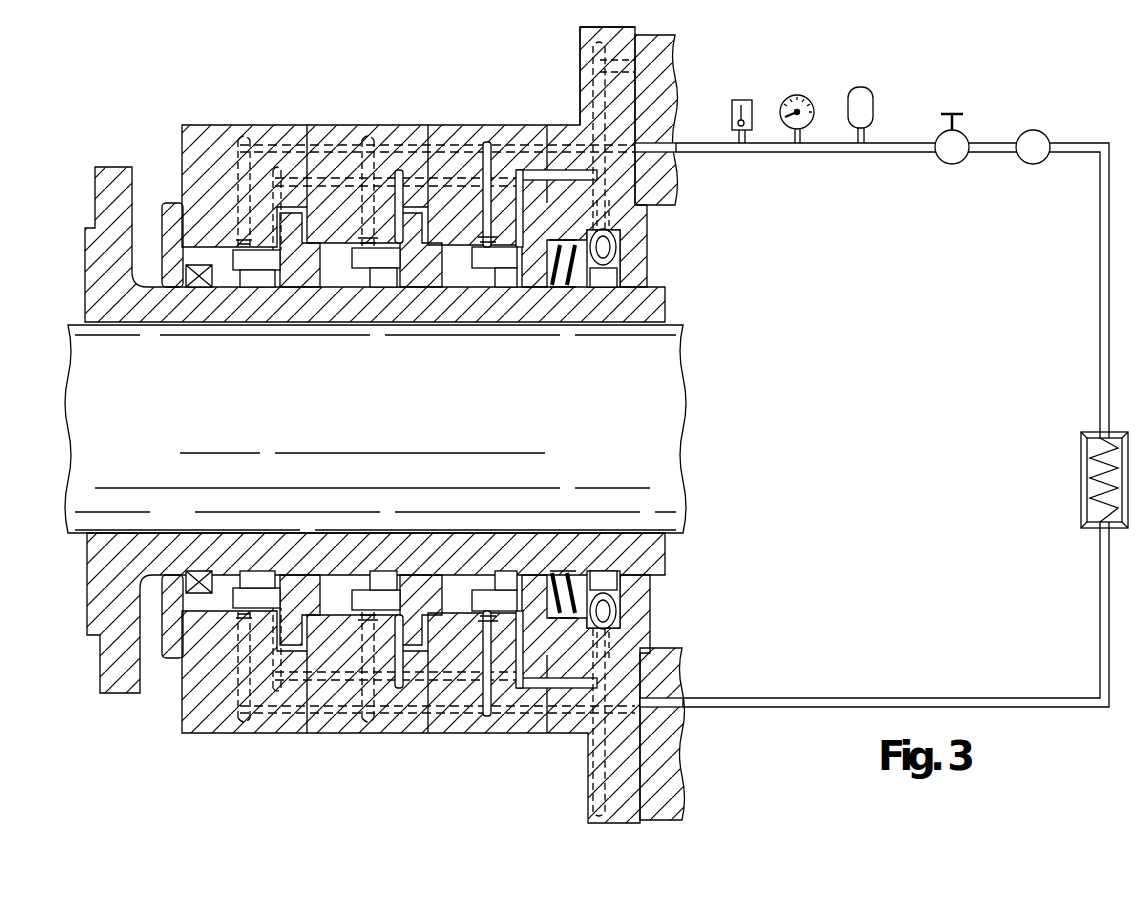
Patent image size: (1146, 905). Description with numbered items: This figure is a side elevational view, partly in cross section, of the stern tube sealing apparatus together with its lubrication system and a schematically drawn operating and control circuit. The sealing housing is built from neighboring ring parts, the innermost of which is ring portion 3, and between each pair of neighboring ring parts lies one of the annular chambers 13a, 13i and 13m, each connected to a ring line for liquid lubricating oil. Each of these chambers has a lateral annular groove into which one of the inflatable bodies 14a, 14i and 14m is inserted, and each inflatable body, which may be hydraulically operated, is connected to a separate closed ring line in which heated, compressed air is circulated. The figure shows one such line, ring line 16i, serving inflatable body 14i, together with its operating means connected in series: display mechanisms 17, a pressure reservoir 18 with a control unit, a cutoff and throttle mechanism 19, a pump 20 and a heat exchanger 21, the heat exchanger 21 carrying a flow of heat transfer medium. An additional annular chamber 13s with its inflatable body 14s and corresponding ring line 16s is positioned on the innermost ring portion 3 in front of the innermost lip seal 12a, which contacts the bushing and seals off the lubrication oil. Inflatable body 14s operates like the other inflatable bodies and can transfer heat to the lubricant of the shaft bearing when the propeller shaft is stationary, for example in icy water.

The ring part 3 is at (597, 40).
The lip seal 12a is at (565, 290).
The annular chamber 13a is at (262, 290).
The annular chamber 13m is at (385, 290).
The annular chamber 13i is at (500, 290).
The annular chamber 13s is at (608, 290).
The inflatable body 14a is at (218, 255).
The inflatable body 14m is at (342, 257).
The inflatable body 14i is at (472, 257).
The inflatable body 14s is at (623, 237).
The ring line 16s is at (579, 101).
The ring line 16i is at (1099, 288).
The display mechanisms 17 is at (795, 97).
The pressure reservoir 18 is at (862, 90).
The cutoff and throttle mechanism 19 is at (937, 135).
The pump 20 is at (1038, 130).
The heat exchanger 21 is at (1080, 473).